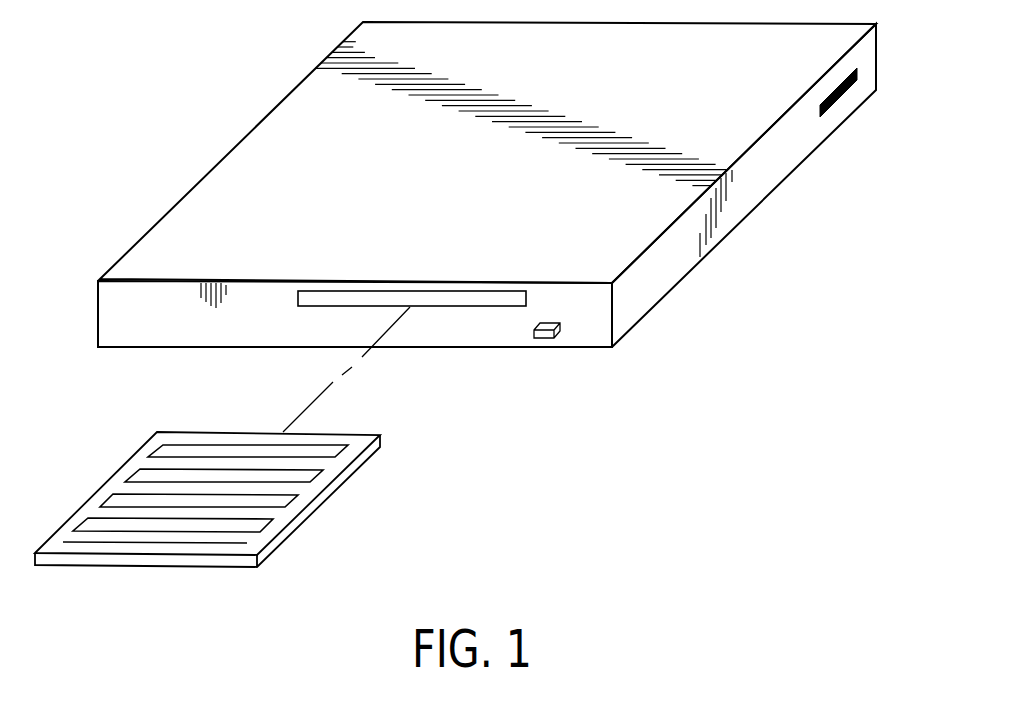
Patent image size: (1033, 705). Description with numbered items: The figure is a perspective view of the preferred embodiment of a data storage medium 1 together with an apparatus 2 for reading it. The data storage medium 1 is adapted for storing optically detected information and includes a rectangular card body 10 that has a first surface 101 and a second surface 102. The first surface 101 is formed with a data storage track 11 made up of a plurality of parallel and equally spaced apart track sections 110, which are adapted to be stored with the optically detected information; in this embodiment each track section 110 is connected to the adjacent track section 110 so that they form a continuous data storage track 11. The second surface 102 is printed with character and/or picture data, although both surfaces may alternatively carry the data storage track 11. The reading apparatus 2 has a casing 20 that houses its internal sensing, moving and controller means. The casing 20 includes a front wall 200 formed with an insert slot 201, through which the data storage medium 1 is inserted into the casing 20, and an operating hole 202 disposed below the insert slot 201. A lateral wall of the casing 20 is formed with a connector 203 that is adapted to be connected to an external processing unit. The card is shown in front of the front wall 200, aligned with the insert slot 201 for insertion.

The data storage medium 1 is at (235, 495).
The card body 10 is at (235, 498).
The first surface 101 is at (358, 440).
The second surface 102 is at (140, 568).
The data storage track 11 is at (205, 453).
The track sections 110 is at (167, 458).
The apparatus 2 is at (503, 221).
The casing 20 is at (244, 166).
The front wall 200 is at (590, 330).
The insert slot 201 is at (338, 303).
The operating hole 202 is at (558, 334).
The connector 203 is at (840, 100).